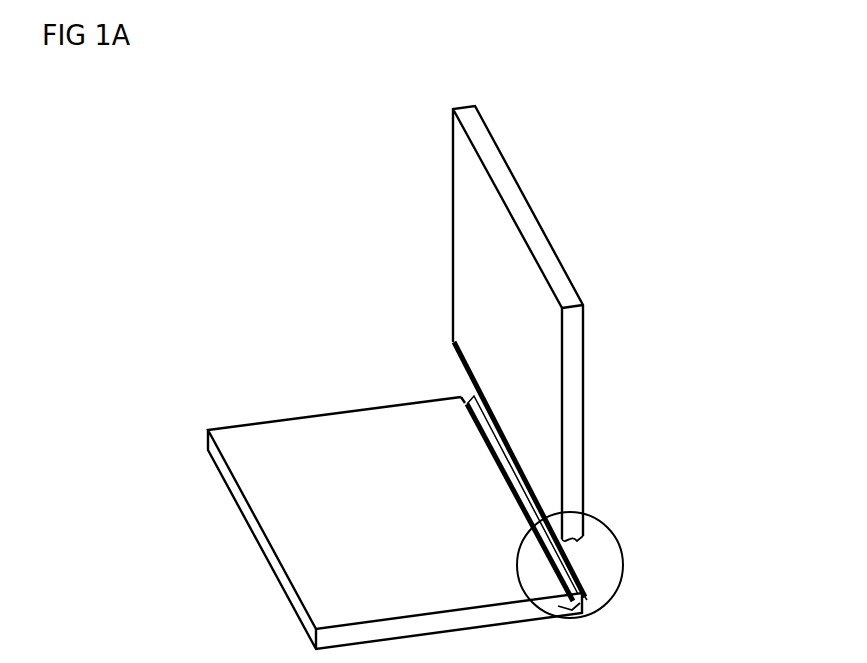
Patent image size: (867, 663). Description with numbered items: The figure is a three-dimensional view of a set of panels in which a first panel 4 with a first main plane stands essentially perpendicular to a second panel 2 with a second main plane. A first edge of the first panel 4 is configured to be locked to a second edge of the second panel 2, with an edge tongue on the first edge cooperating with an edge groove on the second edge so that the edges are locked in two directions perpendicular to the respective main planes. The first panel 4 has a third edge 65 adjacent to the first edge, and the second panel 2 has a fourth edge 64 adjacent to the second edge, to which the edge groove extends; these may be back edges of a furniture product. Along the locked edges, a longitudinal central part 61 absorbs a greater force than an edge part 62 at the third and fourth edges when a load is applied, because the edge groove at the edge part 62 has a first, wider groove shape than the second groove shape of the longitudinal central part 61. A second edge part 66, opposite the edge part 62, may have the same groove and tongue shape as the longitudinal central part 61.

The second panel 2 is at (260, 452).
The first panel 4 is at (522, 223).
The longitudinal central part 61 is at (482, 478).
The edge part 62 is at (609, 561).
The fourth edge 64 is at (563, 605).
The third edge 65 is at (578, 502).
The second edge part 66 is at (442, 369).